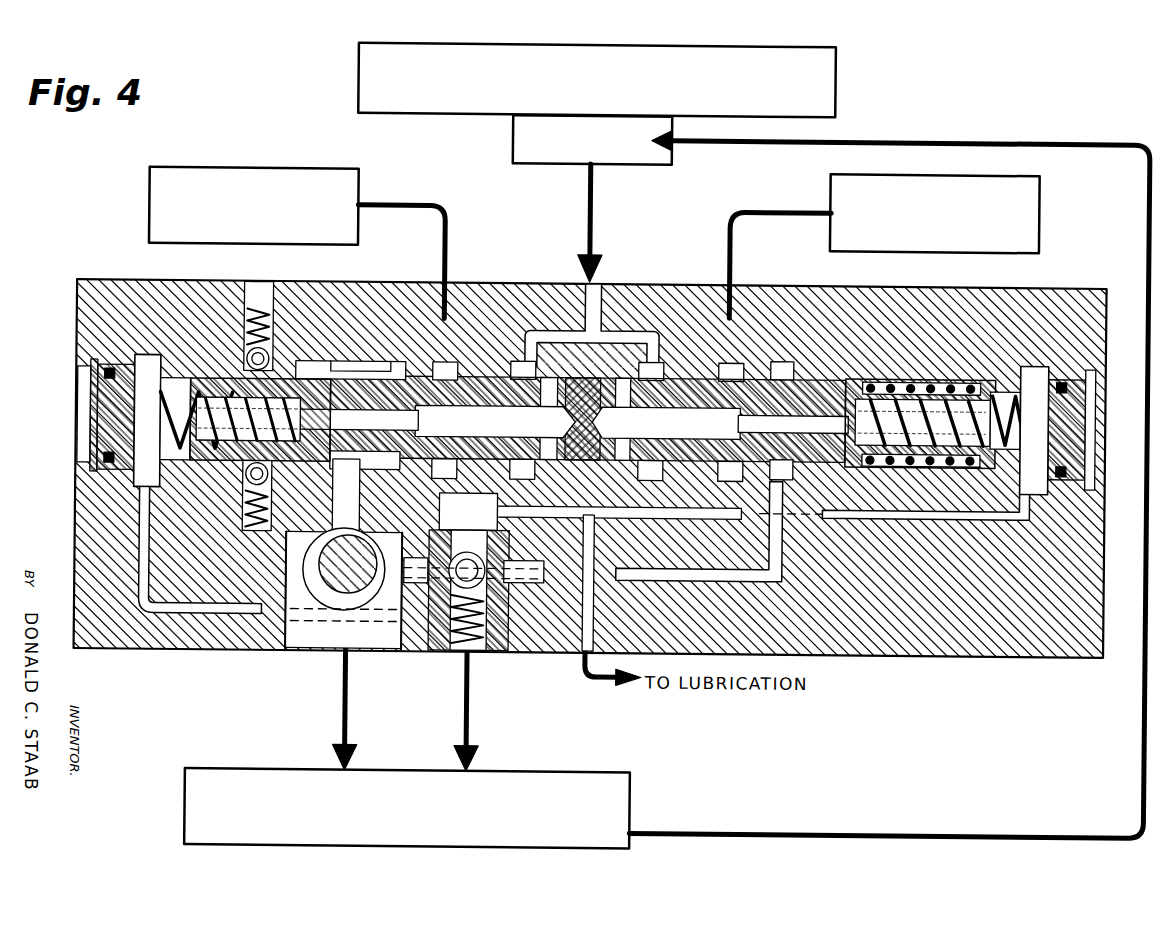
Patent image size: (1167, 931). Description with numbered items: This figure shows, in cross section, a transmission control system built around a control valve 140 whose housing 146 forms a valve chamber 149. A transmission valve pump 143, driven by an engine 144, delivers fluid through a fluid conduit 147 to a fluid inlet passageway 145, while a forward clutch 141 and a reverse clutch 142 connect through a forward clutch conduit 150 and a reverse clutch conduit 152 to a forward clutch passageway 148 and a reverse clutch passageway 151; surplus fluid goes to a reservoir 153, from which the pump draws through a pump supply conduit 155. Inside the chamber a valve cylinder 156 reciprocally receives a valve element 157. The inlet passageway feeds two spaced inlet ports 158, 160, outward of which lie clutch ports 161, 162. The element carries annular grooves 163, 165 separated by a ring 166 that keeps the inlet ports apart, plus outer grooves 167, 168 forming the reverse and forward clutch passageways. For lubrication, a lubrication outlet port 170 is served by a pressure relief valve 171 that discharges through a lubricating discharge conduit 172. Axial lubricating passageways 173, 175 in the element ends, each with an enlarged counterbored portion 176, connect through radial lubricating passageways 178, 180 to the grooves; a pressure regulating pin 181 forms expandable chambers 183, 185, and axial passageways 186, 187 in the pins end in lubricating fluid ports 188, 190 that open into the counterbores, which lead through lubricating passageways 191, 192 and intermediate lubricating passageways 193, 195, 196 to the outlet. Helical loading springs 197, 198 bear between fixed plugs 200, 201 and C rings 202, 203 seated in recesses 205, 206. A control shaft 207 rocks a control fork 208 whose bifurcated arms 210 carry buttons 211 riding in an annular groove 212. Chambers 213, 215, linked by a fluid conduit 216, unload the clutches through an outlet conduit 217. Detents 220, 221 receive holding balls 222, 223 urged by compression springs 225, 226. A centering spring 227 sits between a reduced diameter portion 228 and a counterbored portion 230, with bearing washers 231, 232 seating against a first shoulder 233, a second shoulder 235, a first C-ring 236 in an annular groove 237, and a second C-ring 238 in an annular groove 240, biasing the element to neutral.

The control valve 140 is at (48, 282).
The forward clutch 141 is at (1037, 189).
The reverse clutch 142 is at (252, 171).
The transmission valve pump 143 is at (510, 141).
The engine 144 is at (355, 76).
The fluid inlet passageway 145 is at (598, 278).
The housing 146 is at (75, 295).
The fluid conduit 147 is at (590, 180).
The forward clutch passageway 148 is at (735, 340).
The valve chamber 149 is at (383, 515).
The forward clutch conduit 150 is at (801, 211).
The reverse clutch passageway 151 is at (444, 330).
The reverse clutch conduit 152 is at (417, 207).
The reservoir 153 is at (586, 772).
The pump supply conduit 155 is at (1013, 124).
The valve cylinder 156 is at (475, 284).
The valve element 157 is at (835, 340).
The inlet port 158 is at (522, 340).
The inlet port 160 is at (658, 335).
The clutch port 161 is at (470, 340).
The clutch port 162 is at (740, 330).
The annular groove 163 is at (535, 470).
The annular groove 165 is at (625, 470).
The ring 166 is at (592, 325).
The groove 167 is at (490, 360).
The groove 168 is at (700, 370).
The lubrication outlet port 170 is at (598, 612).
The pressure relief valve 171 is at (505, 539).
The lubricating discharge conduit 172 is at (471, 701).
The axial lubricating passageway 173 is at (405, 482).
The axial lubricating passageway 175 is at (718, 340).
The enlarged counterbored portion 176 is at (228, 378).
The radial lubricating passageways 178 is at (545, 445).
The radial lubricating passageways 180 is at (620, 445).
The pressure regulating pin 181 is at (178, 462).
The expandable chamber 183 is at (588, 418).
The expandable chamber 185 is at (683, 430).
The axial passageway 186 is at (405, 423).
The axial passageway 187 is at (742, 421).
The lubricating fluid port 188 is at (359, 419).
The lubricating fluid port 190 is at (848, 421).
The lubricating passageway 191 is at (85, 360).
The lubricating passageway 192 is at (1050, 372).
The intermediate lubricating passageway 193 is at (140, 530).
The intermediate lubricating passageway 195 is at (1033, 512).
The intermediate lubricating passageway 196 is at (593, 535).
The helical loading spring 197 is at (170, 360).
The helical loading spring 198 is at (925, 470).
The fixed plug 200 is at (100, 395).
The fixed plug 201 is at (1080, 420).
The C ring 202 is at (305, 395).
The C ring 203 is at (850, 515).
The recess 205 is at (300, 395).
The recess 206 is at (793, 478).
The control shaft 207 is at (333, 600).
The control fork 208 is at (307, 515).
The bifurcated arms 210 is at (335, 495).
The buttons 211 is at (352, 395).
The annular groove 212 is at (340, 362).
The chamber 213 is at (373, 362).
The chamber 215 is at (780, 330).
The fluid conduit 216 is at (723, 577).
The outlet conduit 217 is at (349, 702).
The detent 220 is at (200, 462).
The detent 221 is at (308, 479).
The holding ball 222 is at (245, 365).
The holding ball 223 is at (225, 460).
The compression spring 225 is at (252, 310).
The compression spring 226 is at (256, 530).
The centering spring 227 is at (930, 470).
The reduced diameter portion 228 is at (918, 383).
The counterbored portion 230 is at (894, 383).
The bearing washer 231 is at (870, 383).
The bearing washer 232 is at (978, 383).
The first shoulder 233 is at (892, 470).
The second shoulder 235 is at (862, 470).
The first C-ring 236 is at (995, 470).
The annular groove 237 is at (980, 470).
The second C-ring 238 is at (990, 385).
The annular groove 240 is at (993, 390).